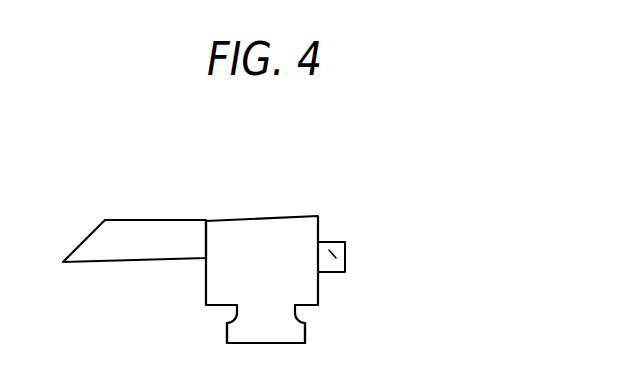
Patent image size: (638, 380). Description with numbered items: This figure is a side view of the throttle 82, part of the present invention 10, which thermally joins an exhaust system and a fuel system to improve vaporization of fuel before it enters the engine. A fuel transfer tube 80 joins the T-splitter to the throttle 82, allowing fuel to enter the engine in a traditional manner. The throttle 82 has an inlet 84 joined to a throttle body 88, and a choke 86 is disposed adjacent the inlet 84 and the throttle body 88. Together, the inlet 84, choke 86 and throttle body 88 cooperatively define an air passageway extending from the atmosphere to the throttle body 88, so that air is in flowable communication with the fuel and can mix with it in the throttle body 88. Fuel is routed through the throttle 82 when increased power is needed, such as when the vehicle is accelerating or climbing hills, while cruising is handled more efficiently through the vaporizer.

The present invention 10 is at (362, 178).
The fuel transfer tube 80 is at (132, 238).
The throttle 82 is at (310, 175).
The inlet 84 is at (345, 253).
The choke 86 is at (327, 254).
The throttle body 88 is at (227, 330).